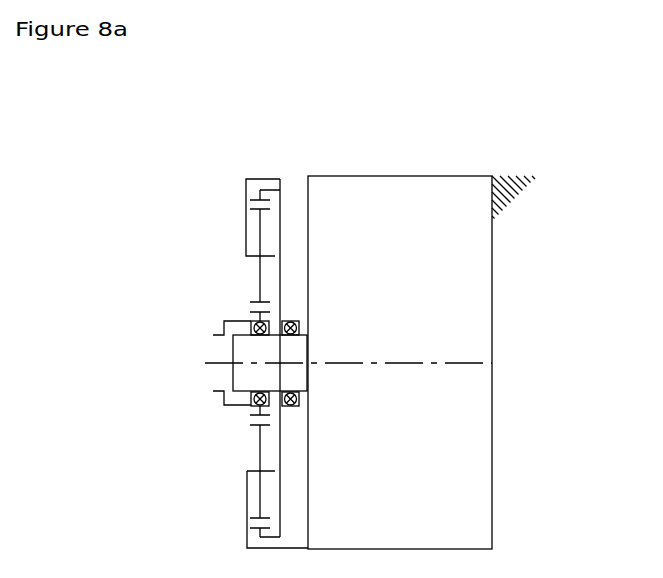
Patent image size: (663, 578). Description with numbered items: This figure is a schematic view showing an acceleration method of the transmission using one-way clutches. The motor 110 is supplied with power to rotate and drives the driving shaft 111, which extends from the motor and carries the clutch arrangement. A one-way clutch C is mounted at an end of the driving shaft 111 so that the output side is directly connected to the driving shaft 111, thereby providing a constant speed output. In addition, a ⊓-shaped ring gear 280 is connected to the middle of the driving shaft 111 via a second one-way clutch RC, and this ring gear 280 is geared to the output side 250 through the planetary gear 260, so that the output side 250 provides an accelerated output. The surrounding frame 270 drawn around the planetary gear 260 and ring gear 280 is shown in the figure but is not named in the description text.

The motor 110 is at (485, 283).
The driving shaft 111 is at (242, 378).
The output side 250 is at (224, 322).
The planetary gear 260 is at (260, 238).
The clutch housing 270 is at (263, 178).
The ⊓-shaped ring gear 280 is at (280, 228).
The one-way clutch C is at (250, 402).
The one-way clutch RC is at (300, 405).